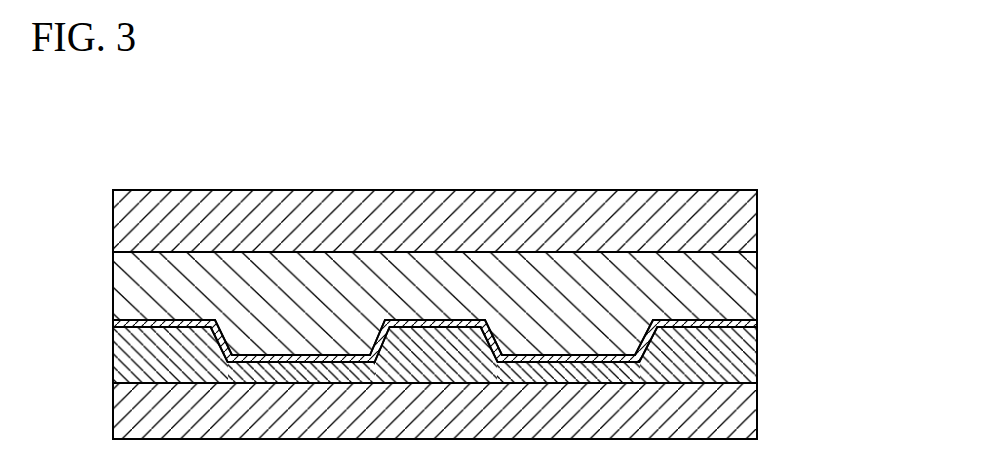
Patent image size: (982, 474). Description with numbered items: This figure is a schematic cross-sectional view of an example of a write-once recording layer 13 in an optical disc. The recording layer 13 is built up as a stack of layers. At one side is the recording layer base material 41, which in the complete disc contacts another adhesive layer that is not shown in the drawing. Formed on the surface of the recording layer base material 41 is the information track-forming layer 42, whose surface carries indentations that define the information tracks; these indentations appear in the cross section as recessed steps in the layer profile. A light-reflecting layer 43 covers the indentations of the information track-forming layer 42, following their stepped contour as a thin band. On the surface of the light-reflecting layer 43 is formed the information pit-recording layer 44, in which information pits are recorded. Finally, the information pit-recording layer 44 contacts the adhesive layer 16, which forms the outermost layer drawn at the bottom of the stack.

The recording layer 13 is at (512, 172).
The recording layer base material 41 is at (757, 215).
The information track-forming layer 42 is at (757, 286).
The light-reflecting layer 43 is at (757, 317).
The information pit-recording layer 44 is at (757, 351).
The adhesive layer 16 is at (757, 406).